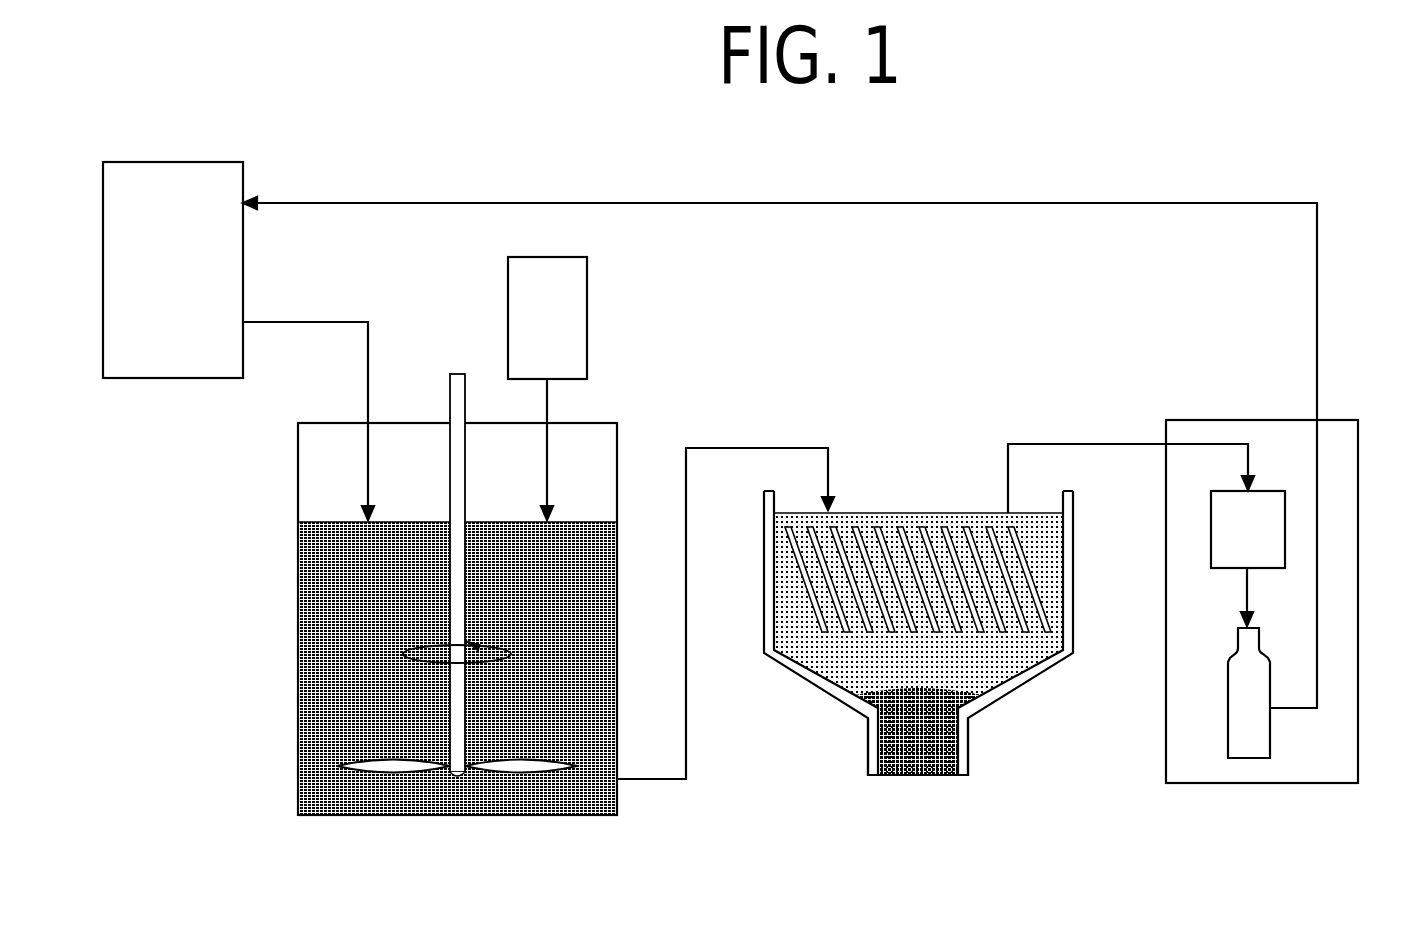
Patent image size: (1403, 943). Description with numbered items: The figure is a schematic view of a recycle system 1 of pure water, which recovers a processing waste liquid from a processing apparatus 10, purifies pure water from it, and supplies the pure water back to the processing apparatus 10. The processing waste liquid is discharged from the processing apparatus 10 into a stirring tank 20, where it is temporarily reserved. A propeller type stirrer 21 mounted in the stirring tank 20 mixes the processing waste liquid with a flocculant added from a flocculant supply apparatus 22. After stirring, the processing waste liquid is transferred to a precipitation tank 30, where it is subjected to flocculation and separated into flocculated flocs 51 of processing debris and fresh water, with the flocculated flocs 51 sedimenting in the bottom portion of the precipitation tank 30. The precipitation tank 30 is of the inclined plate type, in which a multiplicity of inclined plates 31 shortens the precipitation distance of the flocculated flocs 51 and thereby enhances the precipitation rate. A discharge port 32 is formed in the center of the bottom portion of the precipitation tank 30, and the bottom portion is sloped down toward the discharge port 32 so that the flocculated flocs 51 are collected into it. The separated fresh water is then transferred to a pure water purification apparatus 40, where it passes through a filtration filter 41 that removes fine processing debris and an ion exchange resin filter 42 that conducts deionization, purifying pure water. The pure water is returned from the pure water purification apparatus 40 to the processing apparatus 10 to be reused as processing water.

The recycle system 1 is at (1341, 113).
The processing apparatus 10 is at (205, 162).
The stirring tank 20 is at (471, 594).
The propeller type stirrer 21 is at (466, 472).
The flocculant supply apparatus 22 is at (567, 257).
The precipitation tank 30 is at (954, 651).
The inclined plates 31 is at (966, 520).
The discharge port 32 is at (943, 778).
The pure water purification apparatus 40 is at (1277, 580).
The filtration filter 41 is at (1262, 491).
The ion exchange resin filter 42 is at (1258, 628).
The flocculated flocs 51 is at (930, 708).